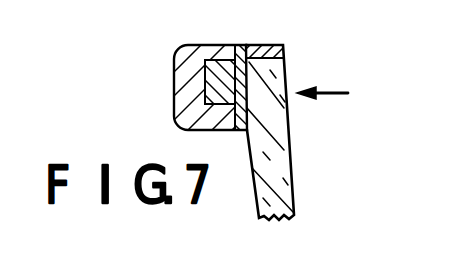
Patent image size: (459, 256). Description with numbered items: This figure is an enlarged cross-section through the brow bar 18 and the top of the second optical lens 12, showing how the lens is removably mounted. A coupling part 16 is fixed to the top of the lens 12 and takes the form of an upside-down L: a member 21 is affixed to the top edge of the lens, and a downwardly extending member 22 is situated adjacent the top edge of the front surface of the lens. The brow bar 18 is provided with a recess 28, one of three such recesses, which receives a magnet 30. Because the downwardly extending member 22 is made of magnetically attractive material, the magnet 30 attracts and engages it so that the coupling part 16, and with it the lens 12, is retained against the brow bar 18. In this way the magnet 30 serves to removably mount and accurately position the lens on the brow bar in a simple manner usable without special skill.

The second optical lens 12 is at (280, 180).
The coupling part 16 is at (264, 46).
The brow bar 18 is at (204, 45).
The member 21 is at (284, 52).
The downwardly extending member 22 is at (248, 97).
The recess 28 is at (180, 130).
The magnet 30 is at (217, 83).